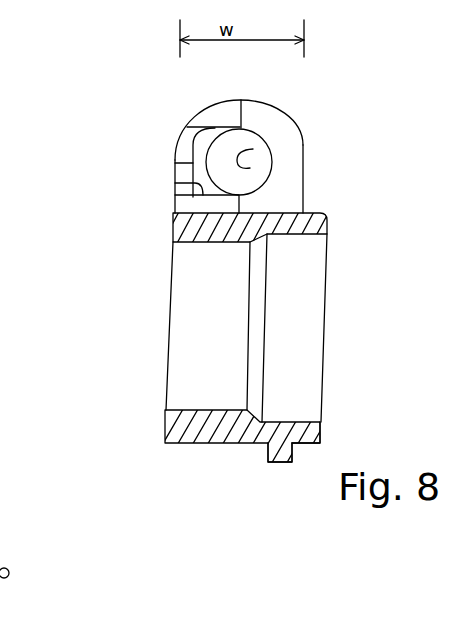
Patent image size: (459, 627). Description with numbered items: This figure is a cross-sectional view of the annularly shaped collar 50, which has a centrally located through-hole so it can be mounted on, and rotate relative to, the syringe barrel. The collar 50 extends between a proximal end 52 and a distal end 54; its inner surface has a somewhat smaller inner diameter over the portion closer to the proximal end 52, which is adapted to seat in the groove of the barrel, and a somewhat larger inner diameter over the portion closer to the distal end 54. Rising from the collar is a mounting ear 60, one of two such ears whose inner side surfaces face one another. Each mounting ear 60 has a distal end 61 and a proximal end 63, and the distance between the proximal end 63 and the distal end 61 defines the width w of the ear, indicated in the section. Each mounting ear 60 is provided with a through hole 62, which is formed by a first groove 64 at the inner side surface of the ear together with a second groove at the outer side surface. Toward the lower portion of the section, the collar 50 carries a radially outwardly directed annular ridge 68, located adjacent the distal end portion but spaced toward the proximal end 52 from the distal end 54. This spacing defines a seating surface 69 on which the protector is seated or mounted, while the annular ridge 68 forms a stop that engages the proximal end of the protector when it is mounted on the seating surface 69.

The collar 50 is at (132, 271).
The proximal end 52 is at (165, 433).
The distal end 54 is at (327, 227).
The mounting ear 60 is at (262, 101).
The distal end 61 is at (305, 173).
The through hole 62 is at (250, 168).
The proximal end 63 is at (175, 170).
The first groove 64 is at (180, 183).
The annular ridge 68 is at (278, 464).
The seating surface 69 is at (300, 447).